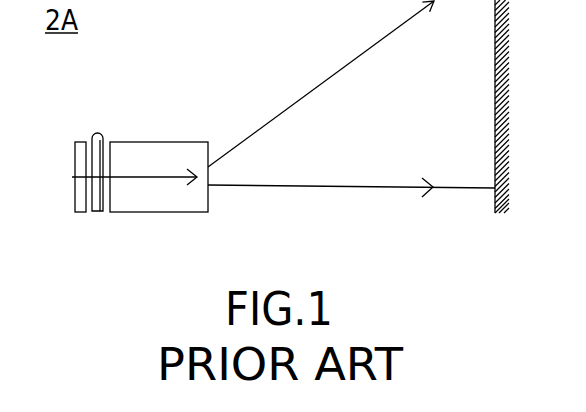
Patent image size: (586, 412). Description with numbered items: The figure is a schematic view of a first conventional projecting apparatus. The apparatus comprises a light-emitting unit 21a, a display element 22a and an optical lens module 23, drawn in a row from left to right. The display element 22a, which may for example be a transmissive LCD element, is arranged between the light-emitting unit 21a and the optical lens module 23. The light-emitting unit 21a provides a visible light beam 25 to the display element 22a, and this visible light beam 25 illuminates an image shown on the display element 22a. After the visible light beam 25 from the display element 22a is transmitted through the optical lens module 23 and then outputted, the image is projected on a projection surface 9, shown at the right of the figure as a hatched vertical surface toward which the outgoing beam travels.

The light-emitting unit 21a is at (72, 192).
The display element 22a is at (99, 137).
The optical lens module 23 is at (158, 141).
The visible light beam 25 is at (160, 178).
The projection surface 9 is at (510, 62).